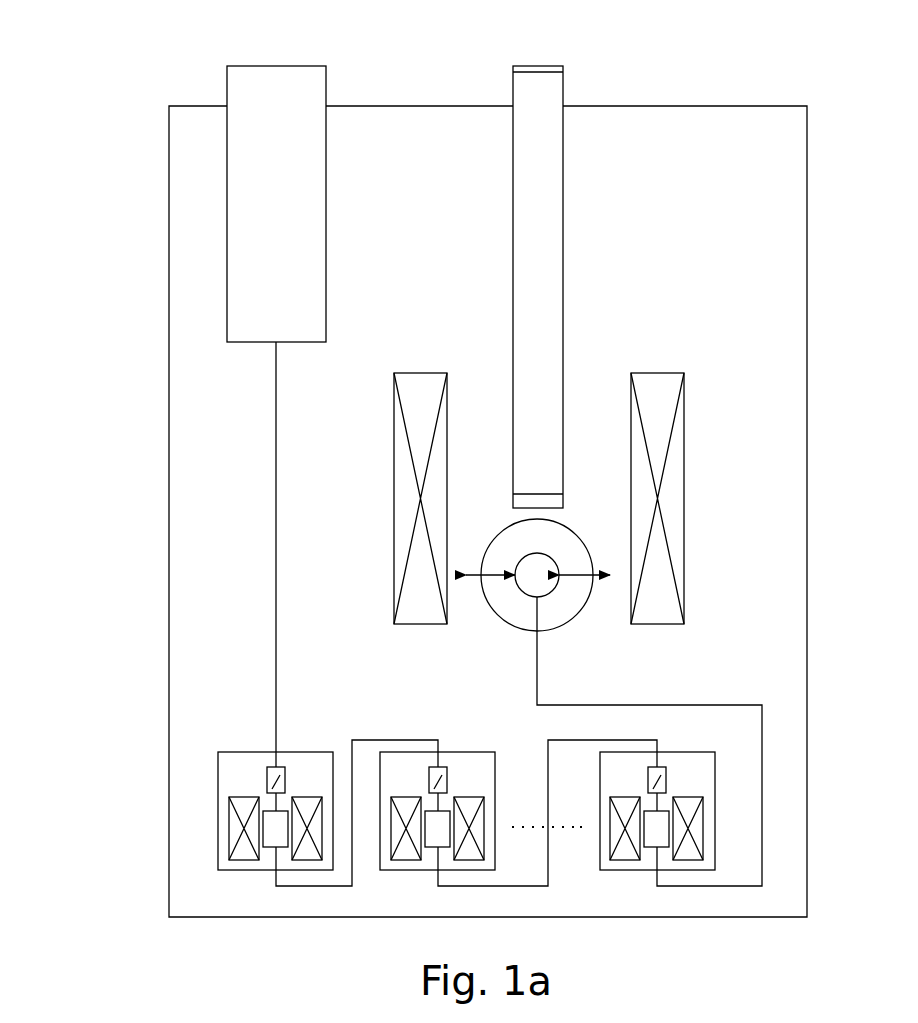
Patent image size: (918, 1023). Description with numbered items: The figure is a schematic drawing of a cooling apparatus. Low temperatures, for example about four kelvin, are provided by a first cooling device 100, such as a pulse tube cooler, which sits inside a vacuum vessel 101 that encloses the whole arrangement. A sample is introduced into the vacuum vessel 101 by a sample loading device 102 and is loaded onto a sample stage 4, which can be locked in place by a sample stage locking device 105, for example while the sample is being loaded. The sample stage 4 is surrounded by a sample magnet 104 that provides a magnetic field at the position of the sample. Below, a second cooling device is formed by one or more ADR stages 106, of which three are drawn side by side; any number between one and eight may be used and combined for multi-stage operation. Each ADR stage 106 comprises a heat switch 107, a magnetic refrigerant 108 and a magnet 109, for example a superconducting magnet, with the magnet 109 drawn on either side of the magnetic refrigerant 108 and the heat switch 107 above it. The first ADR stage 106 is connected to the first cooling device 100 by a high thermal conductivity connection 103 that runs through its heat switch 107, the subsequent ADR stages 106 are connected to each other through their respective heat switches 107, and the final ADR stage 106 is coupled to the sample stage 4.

The first cooling device 100 is at (270, 108).
The vacuum vessel 101 is at (168, 138).
The sample loading device 102 is at (514, 227).
The high thermal conductivity connection 103 is at (274, 370).
The sample magnet 104 is at (394, 425).
The sample stage locking device 105 is at (491, 540).
The sample stage 4 is at (514, 567).
The ADR stage 106 is at (218, 752).
The heat switch 107 is at (266, 781).
The magnetic refrigerant 108 is at (262, 818).
The magnet 109 is at (232, 836).